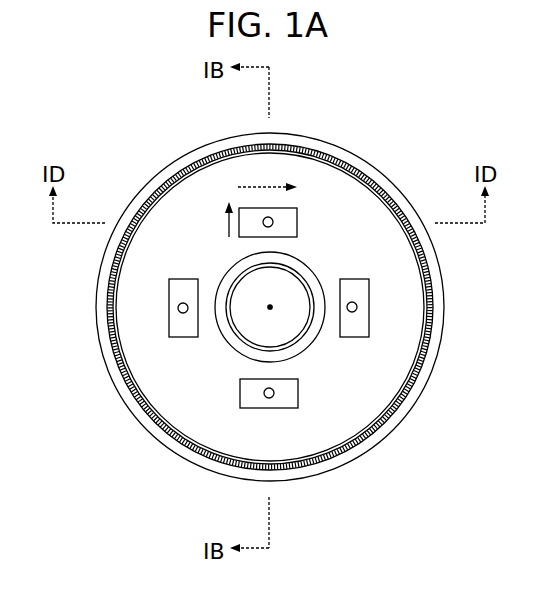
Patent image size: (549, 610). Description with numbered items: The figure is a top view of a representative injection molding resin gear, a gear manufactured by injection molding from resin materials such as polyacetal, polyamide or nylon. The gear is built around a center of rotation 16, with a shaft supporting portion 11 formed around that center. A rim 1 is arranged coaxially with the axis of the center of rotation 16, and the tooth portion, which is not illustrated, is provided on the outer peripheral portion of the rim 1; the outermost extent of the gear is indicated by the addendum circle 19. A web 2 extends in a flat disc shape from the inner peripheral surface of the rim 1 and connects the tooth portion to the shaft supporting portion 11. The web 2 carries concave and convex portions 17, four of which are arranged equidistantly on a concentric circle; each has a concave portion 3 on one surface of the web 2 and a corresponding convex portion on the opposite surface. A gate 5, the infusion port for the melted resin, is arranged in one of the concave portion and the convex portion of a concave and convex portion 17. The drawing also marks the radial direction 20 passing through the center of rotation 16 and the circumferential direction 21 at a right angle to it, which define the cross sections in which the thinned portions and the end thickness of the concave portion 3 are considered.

The rim 1 is at (342, 154).
The web 2 is at (378, 206).
The concave portion 3 is at (357, 294).
The gate 5 is at (357, 311).
The shaft supporting portion 11 is at (305, 341).
The center of rotation 16 is at (268, 310).
The concave and convex portion 17 is at (292, 212).
The addendum circle 19 is at (316, 139).
The radial direction 20 is at (226, 228).
The circumferential direction 21 is at (266, 180).